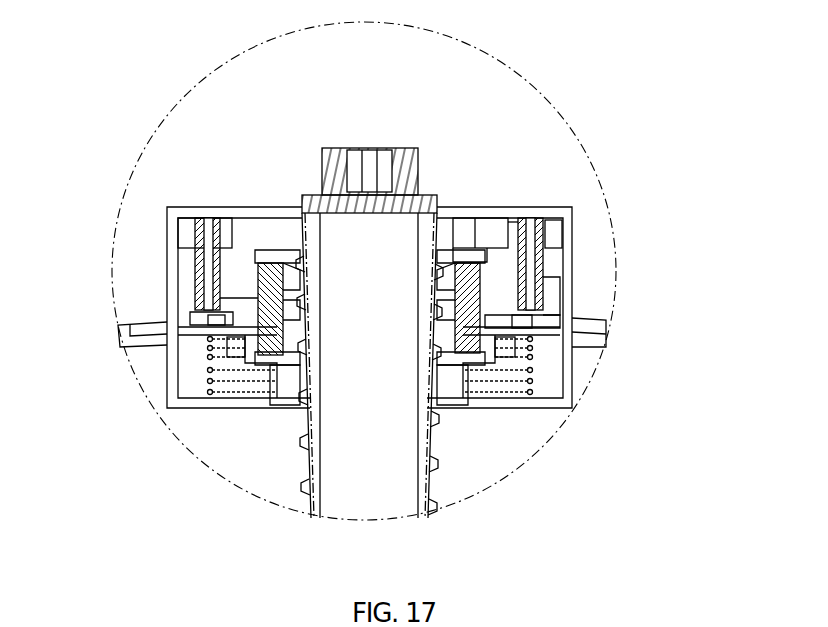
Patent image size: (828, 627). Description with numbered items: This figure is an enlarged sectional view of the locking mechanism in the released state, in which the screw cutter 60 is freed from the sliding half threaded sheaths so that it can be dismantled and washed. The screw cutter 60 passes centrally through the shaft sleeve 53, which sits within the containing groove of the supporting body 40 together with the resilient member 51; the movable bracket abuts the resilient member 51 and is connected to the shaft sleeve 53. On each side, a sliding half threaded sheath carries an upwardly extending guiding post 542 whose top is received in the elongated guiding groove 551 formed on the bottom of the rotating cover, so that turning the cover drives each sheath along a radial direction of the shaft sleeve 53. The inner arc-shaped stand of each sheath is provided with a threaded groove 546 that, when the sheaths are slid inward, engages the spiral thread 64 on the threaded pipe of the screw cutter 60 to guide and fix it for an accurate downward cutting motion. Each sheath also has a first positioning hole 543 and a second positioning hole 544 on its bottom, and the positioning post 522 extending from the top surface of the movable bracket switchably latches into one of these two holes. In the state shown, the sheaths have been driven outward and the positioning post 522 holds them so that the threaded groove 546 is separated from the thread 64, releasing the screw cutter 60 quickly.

The screw cutter 60 is at (398, 155).
The shaft sleeve 53 is at (450, 225).
The guiding groove 551 is at (553, 232).
The guiding post 542 is at (535, 272).
The second positioning hole 544 is at (550, 305).
The positioning post 522 is at (532, 352).
The resilient member 51 is at (545, 355).
The supporting body 40 is at (500, 408).
The thread 64 is at (438, 462).
The threaded groove 546 is at (278, 265).
The first positioning hole 543 is at (190, 300).